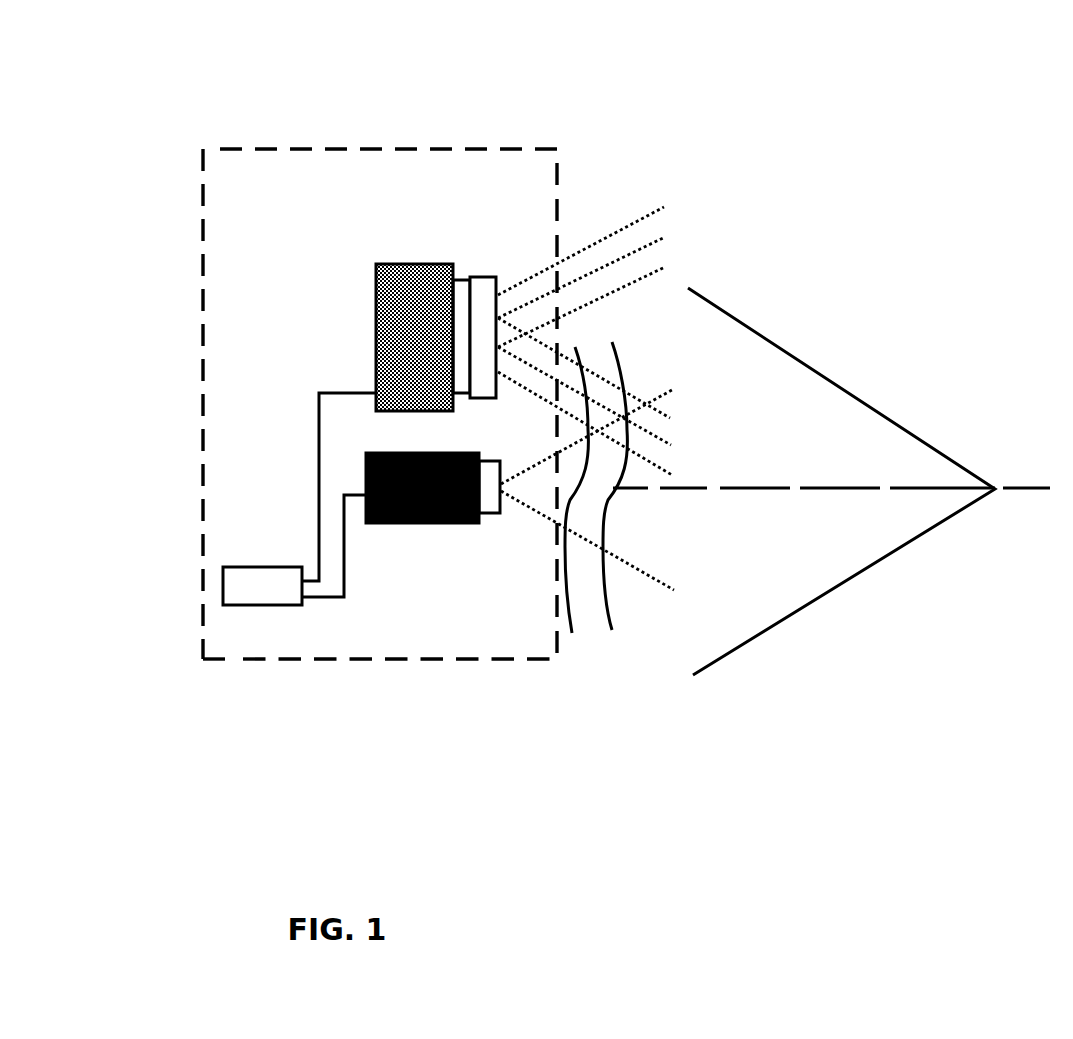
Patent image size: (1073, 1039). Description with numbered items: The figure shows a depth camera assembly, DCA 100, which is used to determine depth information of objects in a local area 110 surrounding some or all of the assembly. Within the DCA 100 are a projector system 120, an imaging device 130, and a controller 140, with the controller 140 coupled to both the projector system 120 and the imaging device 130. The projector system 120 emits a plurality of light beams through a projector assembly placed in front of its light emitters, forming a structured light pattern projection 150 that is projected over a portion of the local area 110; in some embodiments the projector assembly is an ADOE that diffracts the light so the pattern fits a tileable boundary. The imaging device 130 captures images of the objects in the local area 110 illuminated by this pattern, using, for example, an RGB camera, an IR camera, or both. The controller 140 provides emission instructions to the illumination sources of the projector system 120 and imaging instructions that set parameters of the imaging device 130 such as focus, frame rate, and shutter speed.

The depth camera assembly (DCA) 100 is at (240, 150).
The local area 110 is at (823, 572).
The projector system 120 is at (413, 264).
The imaging device 130 is at (425, 525).
The controller 140 is at (234, 605).
The structured light (SL) pattern projection 150 is at (615, 250).